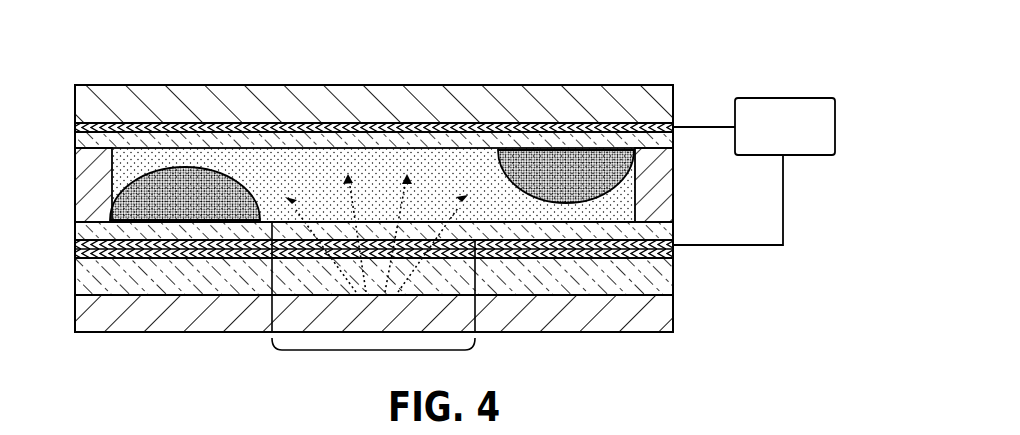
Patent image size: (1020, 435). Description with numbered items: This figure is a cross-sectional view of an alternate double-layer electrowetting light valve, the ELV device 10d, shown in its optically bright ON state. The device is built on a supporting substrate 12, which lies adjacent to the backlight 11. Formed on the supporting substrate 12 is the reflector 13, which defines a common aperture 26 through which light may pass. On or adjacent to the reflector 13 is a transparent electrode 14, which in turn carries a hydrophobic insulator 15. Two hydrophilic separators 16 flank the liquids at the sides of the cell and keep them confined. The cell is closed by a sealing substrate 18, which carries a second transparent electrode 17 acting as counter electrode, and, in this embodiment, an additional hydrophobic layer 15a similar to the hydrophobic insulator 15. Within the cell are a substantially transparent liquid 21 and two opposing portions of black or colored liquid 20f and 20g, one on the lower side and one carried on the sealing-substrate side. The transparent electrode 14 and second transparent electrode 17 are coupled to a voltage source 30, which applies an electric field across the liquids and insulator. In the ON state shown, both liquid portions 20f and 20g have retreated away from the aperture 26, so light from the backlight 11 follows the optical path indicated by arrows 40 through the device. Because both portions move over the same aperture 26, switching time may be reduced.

The ELV device 10d is at (659, 46).
The backlight 11 is at (675, 315).
The supporting substrate 12 is at (78, 275).
The reflector 13 is at (80, 246).
The transparent electrode 14 is at (271, 222).
The hydrophobic insulator 15 is at (90, 234).
The additional hydrophobic layer 15a is at (78, 138).
The hydrophilic separator 16 is at (82, 200).
The second transparent electrode 17 is at (78, 121).
The sealing substrate 18 is at (675, 103).
The portion of liquid 20f is at (115, 168).
The portion of liquid 20g is at (520, 193).
The transparent liquid 21 is at (615, 209).
The aperture 26 is at (372, 350).
The voltage source 30 is at (813, 98).
The arrows 40 is at (397, 208).